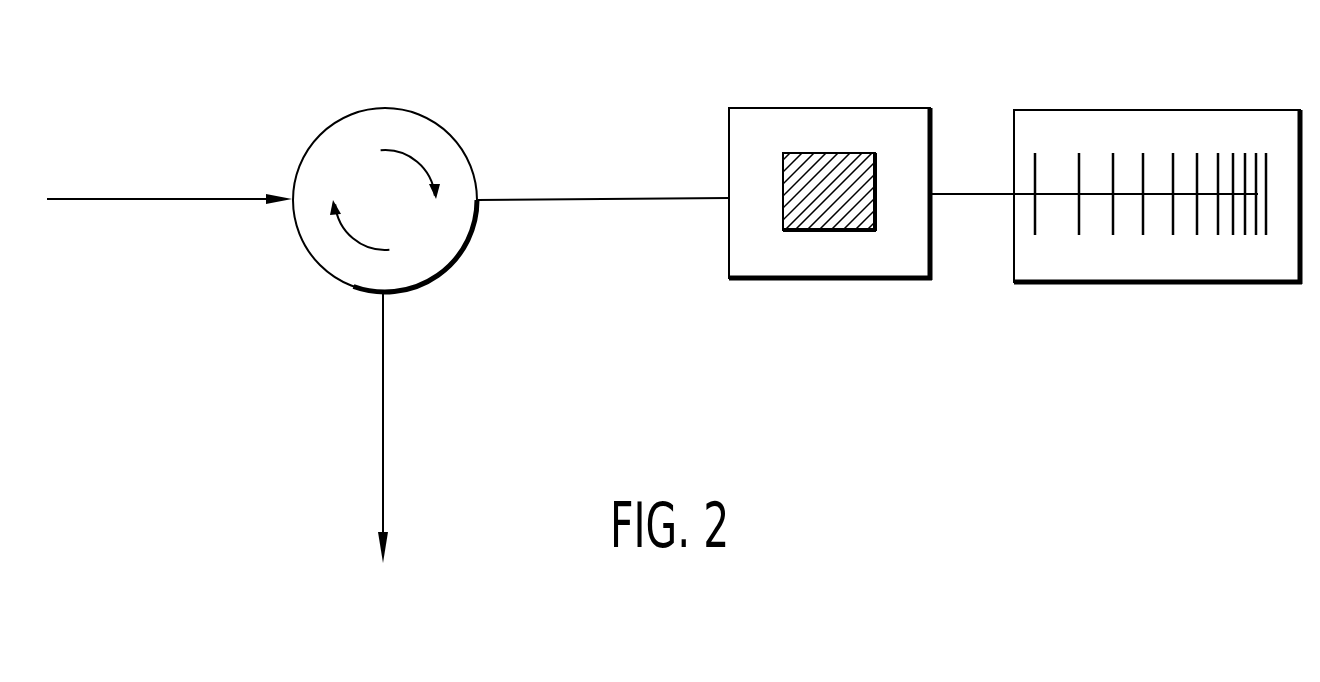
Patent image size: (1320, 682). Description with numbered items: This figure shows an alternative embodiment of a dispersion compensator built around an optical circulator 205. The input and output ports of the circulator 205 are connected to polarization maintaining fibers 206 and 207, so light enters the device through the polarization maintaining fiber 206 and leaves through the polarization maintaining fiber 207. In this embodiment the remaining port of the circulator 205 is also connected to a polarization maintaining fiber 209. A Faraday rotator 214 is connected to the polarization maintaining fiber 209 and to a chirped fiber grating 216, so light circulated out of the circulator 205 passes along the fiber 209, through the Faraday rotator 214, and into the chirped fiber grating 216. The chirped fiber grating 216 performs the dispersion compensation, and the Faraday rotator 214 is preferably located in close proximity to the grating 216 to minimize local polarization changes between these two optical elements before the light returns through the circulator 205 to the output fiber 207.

The polarization maintaining fiber 206 is at (120, 199).
The circulator 205 is at (390, 108).
The polarization maintaining fiber 209 is at (583, 200).
The Faraday rotator 214 is at (828, 108).
The chirped fiber grating 216 is at (1168, 110).
The polarization maintaining fiber 207 is at (383, 437).